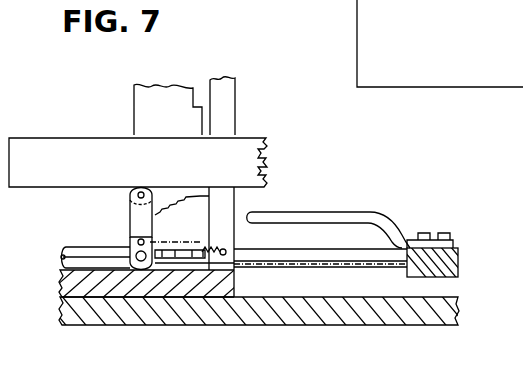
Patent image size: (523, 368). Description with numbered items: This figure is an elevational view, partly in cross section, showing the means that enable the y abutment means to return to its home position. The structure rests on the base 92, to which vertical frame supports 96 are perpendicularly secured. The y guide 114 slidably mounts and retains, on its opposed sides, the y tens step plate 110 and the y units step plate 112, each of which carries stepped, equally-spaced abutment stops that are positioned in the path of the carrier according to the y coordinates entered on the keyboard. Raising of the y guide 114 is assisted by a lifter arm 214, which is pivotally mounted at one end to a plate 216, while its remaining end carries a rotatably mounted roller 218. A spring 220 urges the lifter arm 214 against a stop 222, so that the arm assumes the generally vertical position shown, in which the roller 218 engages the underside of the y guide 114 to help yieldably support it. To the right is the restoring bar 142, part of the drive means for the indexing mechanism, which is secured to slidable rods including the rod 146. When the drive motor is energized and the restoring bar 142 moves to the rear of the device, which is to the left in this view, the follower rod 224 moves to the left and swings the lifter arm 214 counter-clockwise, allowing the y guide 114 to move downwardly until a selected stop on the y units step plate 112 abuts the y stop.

The base 92 is at (293, 320).
The vertical frame supports 96 is at (232, 100).
The y tens step plate 110 is at (150, 90).
The y units step plate 112 is at (173, 196).
The y guide 114 is at (53, 146).
The restoring bar 142 is at (456, 262).
The rod 146 is at (302, 264).
The lifter arm 214 is at (130, 230).
The plate 216 is at (62, 282).
The roller 218 is at (144, 186).
The spring 220 is at (199, 245).
The stop 222 is at (208, 263).
The follower rod 224 is at (334, 215).